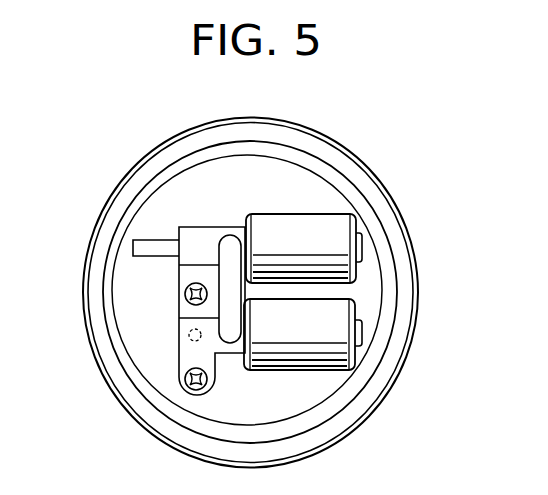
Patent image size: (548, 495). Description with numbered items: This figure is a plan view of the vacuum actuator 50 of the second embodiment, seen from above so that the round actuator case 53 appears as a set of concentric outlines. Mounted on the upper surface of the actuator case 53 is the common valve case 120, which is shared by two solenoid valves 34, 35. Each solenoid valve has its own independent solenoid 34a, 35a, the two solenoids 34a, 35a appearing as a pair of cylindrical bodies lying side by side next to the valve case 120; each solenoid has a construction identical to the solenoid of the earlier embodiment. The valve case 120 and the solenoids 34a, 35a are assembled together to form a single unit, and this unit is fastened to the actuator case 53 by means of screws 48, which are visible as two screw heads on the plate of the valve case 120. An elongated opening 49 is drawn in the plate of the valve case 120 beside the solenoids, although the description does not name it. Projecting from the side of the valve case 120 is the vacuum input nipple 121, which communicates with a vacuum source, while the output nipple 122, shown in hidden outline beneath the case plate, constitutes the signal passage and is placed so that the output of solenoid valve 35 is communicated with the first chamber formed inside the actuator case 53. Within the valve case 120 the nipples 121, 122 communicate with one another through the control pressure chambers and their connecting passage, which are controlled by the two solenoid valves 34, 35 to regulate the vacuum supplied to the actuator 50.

The solenoid valve 34 is at (304, 212).
The solenoid 34a is at (343, 228).
The solenoid valve 35 is at (277, 380).
The solenoid 35a is at (350, 368).
The screws 48 is at (186, 289).
The slot 49 is at (243, 219).
The vacuum actuator 50 is at (98, 396).
The actuator case 53 is at (307, 178).
The valve case 120 is at (167, 321).
The vacuum input nipple 121 is at (152, 244).
The output nipple 122 is at (203, 341).